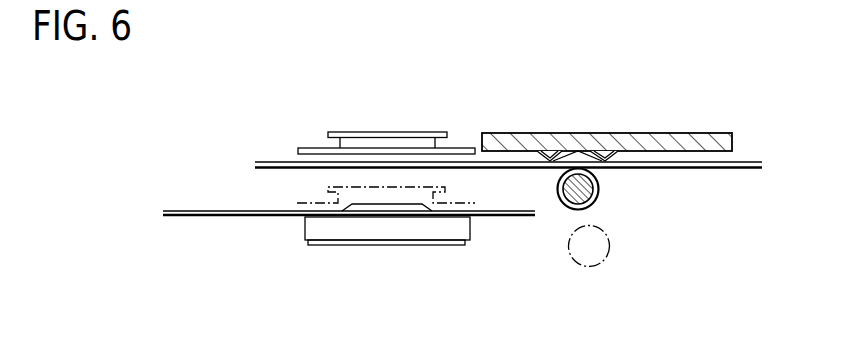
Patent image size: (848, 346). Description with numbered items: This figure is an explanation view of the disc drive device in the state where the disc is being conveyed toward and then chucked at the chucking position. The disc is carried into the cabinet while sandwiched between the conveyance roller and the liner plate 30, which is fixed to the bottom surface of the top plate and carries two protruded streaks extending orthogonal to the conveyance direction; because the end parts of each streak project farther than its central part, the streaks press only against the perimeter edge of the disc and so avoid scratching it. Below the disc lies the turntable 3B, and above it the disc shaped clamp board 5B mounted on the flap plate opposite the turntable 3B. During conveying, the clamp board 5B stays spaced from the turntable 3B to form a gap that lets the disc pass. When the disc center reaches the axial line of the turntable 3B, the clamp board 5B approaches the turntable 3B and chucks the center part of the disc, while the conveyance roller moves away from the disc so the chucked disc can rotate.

The turntable 3B is at (390, 232).
The clamp board 5B is at (372, 132).
The liner plate 30 is at (698, 133).